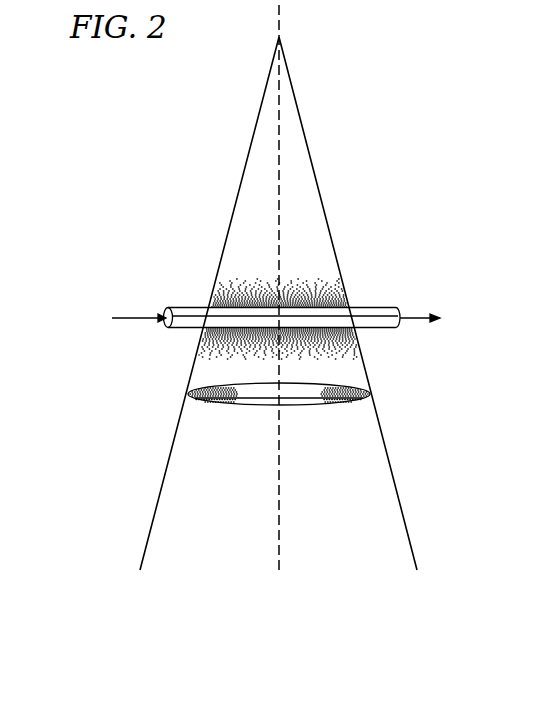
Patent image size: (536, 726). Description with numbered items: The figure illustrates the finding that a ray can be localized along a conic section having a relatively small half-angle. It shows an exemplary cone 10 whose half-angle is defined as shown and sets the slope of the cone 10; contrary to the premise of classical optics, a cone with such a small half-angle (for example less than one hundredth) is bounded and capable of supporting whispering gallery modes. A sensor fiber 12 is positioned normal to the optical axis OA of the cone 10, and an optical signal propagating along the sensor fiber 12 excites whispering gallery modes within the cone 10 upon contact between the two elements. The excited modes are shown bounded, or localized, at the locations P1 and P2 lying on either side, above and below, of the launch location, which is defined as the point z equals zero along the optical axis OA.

The cone 10 is at (321, 200).
The sensor fiber 12 is at (183, 306).
The optical axis OA is at (281, 148).
The location P1 is at (336, 256).
The location P2 is at (370, 394).